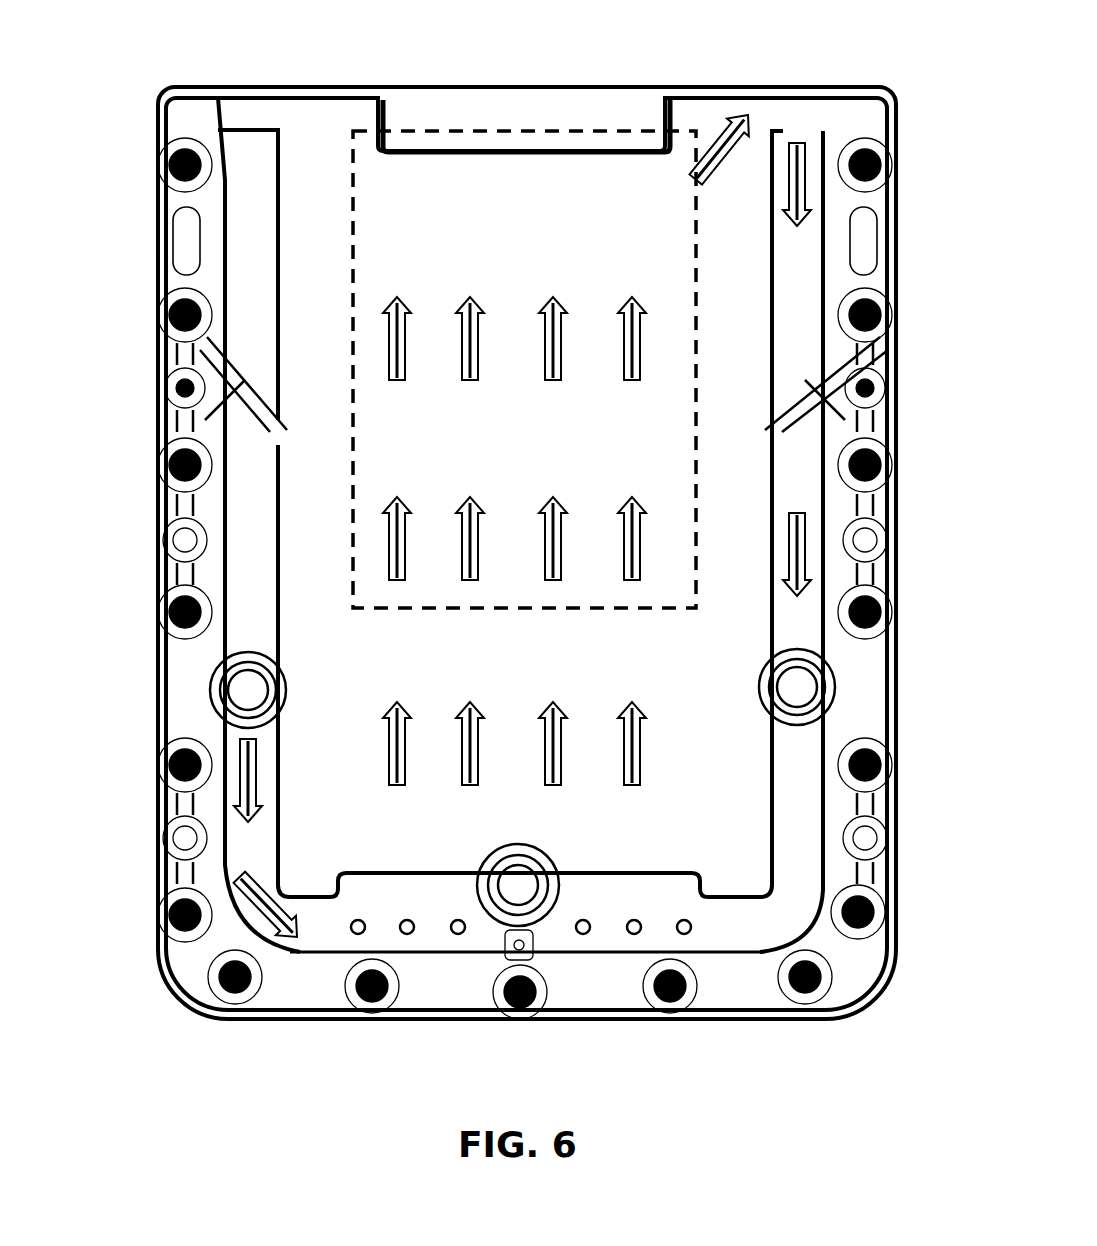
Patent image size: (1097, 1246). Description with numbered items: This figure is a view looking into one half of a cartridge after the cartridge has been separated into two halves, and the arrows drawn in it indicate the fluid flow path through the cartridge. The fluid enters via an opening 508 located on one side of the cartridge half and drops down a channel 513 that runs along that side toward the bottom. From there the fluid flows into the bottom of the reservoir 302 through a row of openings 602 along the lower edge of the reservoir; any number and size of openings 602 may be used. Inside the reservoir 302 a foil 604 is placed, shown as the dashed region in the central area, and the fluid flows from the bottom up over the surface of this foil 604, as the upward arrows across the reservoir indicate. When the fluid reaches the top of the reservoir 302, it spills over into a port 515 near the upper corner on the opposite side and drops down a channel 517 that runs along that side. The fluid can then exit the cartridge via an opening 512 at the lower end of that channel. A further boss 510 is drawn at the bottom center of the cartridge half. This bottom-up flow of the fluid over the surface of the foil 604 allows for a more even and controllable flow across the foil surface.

The reservoir 302 is at (460, 632).
The opening 508 is at (232, 690).
The bottom center boss 510 is at (505, 905).
The opening 512 is at (812, 686).
The channel 513 is at (245, 858).
The port 515 is at (802, 133).
The channel 517 is at (802, 480).
The openings 602 is at (352, 930).
The foil 604 is at (357, 133).